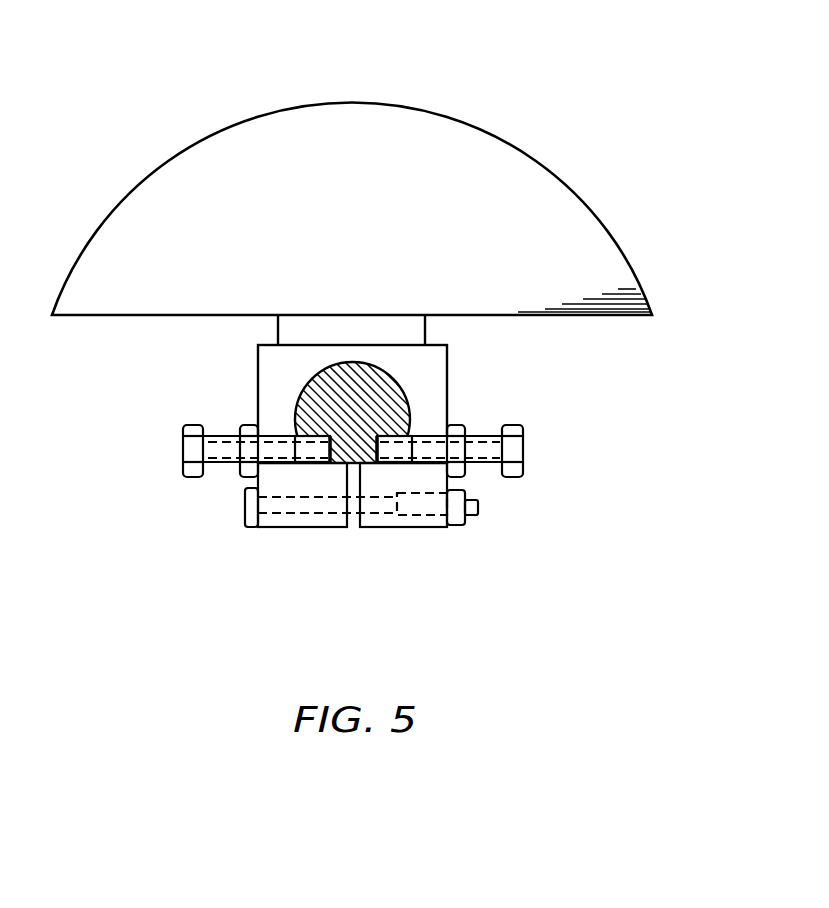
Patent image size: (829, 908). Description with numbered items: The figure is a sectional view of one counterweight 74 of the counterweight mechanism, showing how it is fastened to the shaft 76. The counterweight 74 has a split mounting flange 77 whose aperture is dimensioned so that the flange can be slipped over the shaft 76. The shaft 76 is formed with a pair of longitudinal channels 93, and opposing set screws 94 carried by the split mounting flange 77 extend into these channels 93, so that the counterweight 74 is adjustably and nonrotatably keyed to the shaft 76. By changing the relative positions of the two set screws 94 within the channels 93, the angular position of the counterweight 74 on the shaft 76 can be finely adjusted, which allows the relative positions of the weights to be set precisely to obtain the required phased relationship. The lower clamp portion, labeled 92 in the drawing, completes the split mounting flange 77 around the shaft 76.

The counterweight 74 is at (352, 172).
The split mounting flange 77 is at (396, 389).
The shaft 76 is at (374, 422).
The longitudinal channels 93 is at (295, 428).
The set screws 94 is at (352, 451).
The lower clamp 92 is at (250, 507).